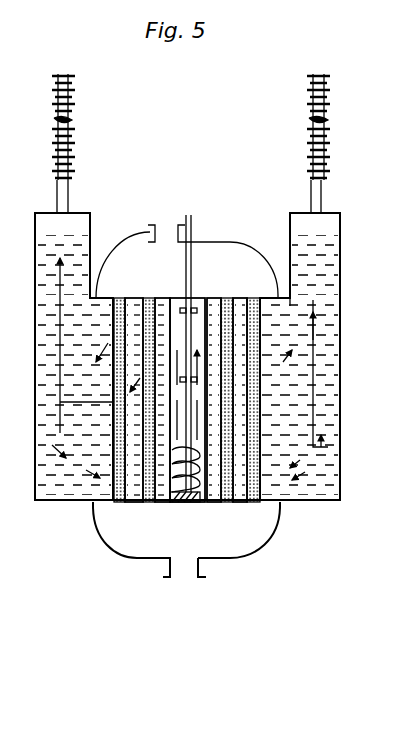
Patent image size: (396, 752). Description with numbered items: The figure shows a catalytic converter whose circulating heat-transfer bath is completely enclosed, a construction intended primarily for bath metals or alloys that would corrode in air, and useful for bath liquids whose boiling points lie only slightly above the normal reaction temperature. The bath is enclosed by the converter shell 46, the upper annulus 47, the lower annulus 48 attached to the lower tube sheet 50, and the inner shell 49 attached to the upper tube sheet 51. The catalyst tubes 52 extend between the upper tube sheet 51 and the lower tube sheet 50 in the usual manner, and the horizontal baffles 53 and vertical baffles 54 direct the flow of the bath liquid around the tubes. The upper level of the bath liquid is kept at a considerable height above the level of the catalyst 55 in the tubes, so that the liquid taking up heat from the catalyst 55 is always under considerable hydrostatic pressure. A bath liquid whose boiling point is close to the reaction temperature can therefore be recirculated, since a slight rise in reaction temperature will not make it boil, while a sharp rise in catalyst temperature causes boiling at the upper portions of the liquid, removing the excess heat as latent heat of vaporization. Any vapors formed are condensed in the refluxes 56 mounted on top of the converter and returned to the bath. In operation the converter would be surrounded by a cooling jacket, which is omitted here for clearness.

The converter shell 46 is at (342, 309).
The upper annulus 47 is at (331, 212).
The lower annulus 48 is at (321, 500).
The inner shell 49 is at (90, 252).
The lower tube sheet 50 is at (272, 514).
The upper tube sheet 51 is at (107, 292).
The catalyst tubes 52 is at (224, 298).
The horizontal baffles 53 is at (285, 403).
The vertical baffles 54 is at (316, 352).
The catalyst 55 is at (260, 360).
The refluxes 56 is at (331, 146).